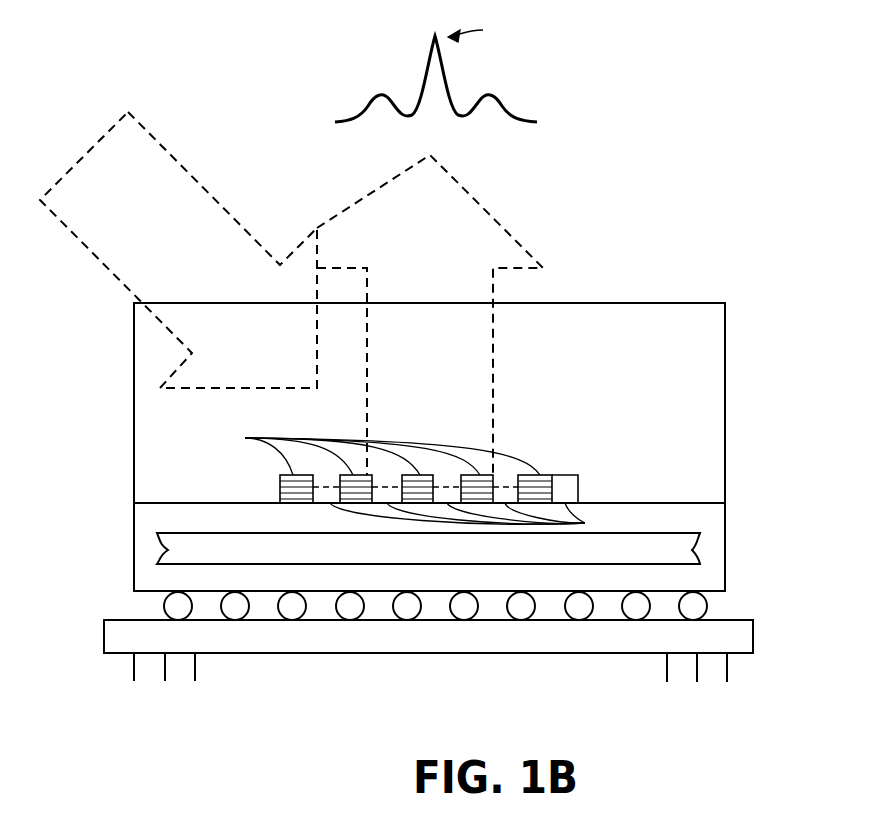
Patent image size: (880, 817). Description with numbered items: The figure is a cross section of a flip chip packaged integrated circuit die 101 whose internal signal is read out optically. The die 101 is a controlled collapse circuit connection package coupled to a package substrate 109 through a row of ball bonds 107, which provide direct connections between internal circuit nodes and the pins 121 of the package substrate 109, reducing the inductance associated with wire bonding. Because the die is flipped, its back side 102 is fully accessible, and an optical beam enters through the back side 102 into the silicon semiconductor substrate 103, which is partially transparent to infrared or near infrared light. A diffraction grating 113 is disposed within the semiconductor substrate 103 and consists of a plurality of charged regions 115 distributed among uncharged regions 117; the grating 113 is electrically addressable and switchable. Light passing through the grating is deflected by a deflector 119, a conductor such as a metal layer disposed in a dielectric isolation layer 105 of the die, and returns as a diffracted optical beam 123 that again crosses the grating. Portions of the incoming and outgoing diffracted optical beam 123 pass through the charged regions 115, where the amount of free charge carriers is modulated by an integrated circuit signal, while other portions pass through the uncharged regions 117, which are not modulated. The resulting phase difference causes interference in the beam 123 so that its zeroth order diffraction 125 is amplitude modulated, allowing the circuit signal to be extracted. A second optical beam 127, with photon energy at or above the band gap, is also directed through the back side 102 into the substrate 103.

The integrated circuit die 101 is at (743, 273).
The back side 102 is at (577, 293).
The semiconductor substrate 103 is at (718, 340).
The dielectric isolation layer 105 is at (718, 517).
The ball bonds 107 is at (578, 620).
The package substrate 109 is at (745, 635).
The diffraction grating 113 is at (570, 455).
The charged regions 115 is at (368, 450).
The uncharged regions 117 is at (479, 517).
The deflector 119 is at (640, 538).
The pins 121 is at (122, 690).
The diffracted optical beam 123 is at (478, 233).
The zeroth order diffraction 125 is at (423, 42).
The second optical beam 127 is at (185, 168).